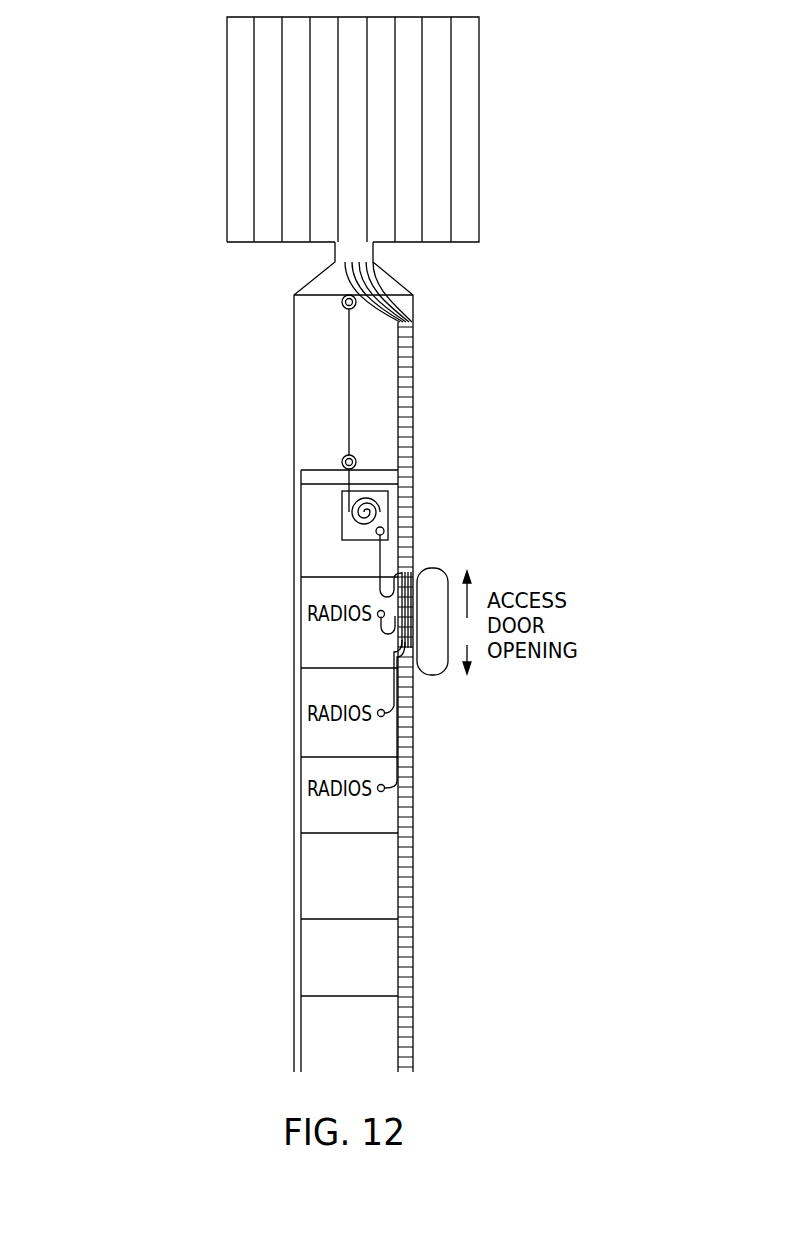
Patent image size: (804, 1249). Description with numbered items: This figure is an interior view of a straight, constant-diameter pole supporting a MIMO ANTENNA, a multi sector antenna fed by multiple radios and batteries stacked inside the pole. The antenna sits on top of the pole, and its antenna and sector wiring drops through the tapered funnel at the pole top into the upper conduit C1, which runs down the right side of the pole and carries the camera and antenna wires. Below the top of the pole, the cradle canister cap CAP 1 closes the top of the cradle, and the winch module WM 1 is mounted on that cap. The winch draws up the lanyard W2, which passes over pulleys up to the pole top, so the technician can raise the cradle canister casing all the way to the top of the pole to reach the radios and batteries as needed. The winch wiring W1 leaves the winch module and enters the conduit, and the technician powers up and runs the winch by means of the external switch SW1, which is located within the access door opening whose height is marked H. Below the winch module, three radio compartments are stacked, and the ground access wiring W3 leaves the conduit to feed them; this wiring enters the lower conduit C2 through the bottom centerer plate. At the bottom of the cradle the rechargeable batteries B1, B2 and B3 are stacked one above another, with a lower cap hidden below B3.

The MIMO multi sector antenna MIMO ANTENNA is at (193, 152).
The cradle canister cap CAP 1 is at (290, 477).
The winch module WM 1 is at (310, 529).
The lanyard W2 is at (335, 403).
The upper conduit C1 is at (425, 697).
The lower conduit C2 is at (444, 768).
The winch wiring W1 is at (406, 582).
The ground access wiring W3 is at (415, 668).
The external switch SW1 is at (415, 578).
The access door opening height H is at (467, 622).
The rechargeable battery B1 is at (351, 878).
The rechargeable battery B2 is at (351, 956).
The rechargeable battery B3 is at (351, 1031).